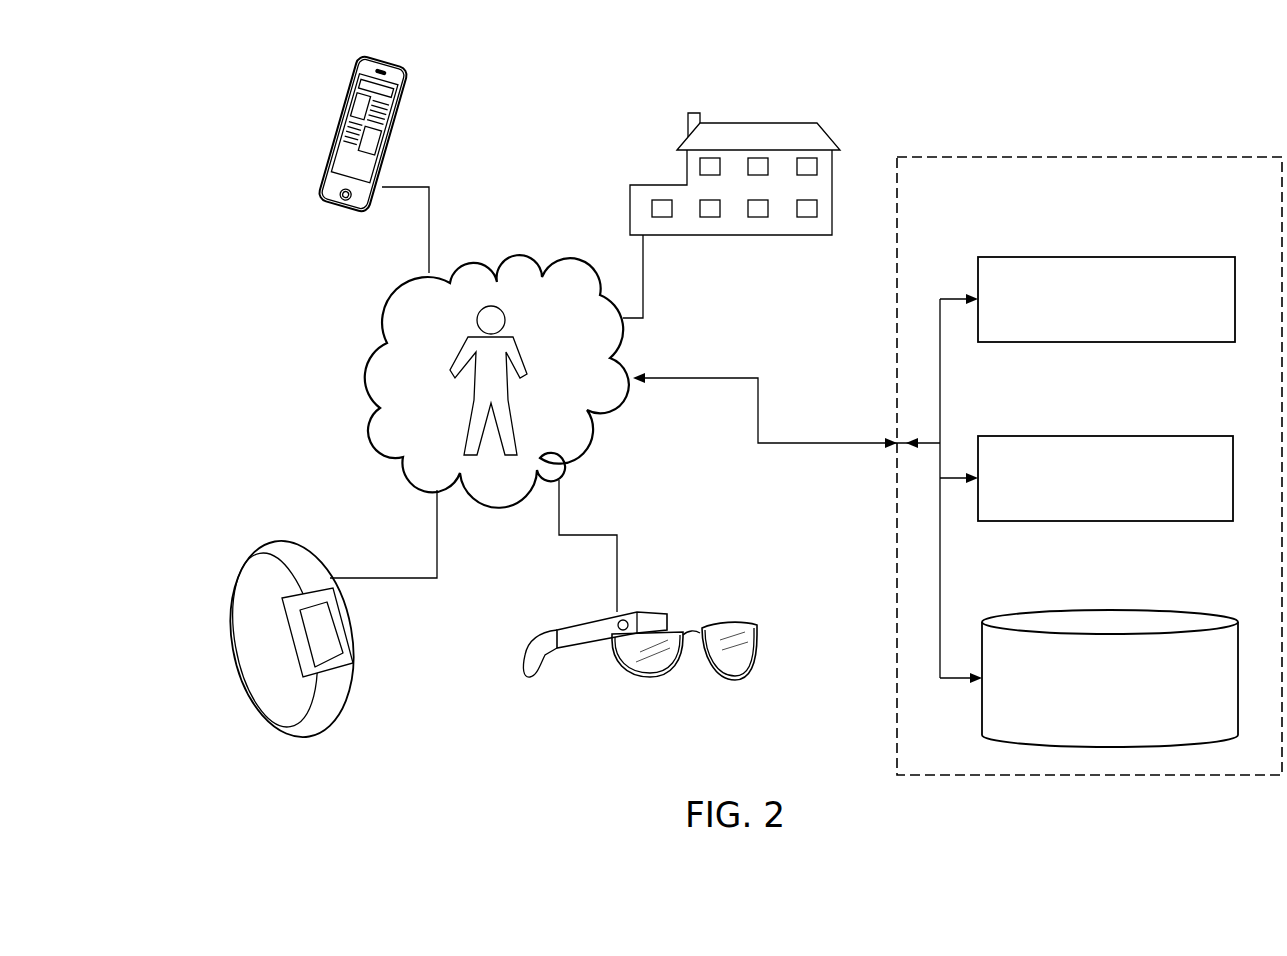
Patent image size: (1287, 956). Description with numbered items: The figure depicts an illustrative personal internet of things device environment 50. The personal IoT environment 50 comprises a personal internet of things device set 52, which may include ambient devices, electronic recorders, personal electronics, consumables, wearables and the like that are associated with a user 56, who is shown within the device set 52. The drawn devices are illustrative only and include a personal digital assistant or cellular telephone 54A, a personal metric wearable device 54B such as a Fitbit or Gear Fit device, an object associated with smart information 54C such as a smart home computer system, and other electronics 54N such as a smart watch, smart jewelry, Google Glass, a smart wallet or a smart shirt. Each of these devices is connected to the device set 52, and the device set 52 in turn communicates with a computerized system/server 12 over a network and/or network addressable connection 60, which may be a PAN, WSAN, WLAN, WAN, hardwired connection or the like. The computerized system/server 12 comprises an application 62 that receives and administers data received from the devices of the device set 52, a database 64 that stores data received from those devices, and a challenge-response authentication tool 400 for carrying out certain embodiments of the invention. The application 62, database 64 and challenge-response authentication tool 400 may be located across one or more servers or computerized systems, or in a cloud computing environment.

The personal internet of things device environment 50 is at (256, 274).
The personal internet of things device set 52 is at (363, 377).
The user 56 is at (470, 414).
The personal digital assistant or cellular telephone 54A is at (338, 118).
The personal metric wearable device 54B is at (237, 640).
The object associated with smart information 54C is at (760, 122).
The other electronics 54N is at (648, 678).
The network and/or network addressable connection 60 is at (803, 443).
The computerized system/server 12 is at (1117, 157).
The challenge-response authentication tool 400 is at (1222, 257).
The application 62 is at (1110, 436).
The database 64 is at (1113, 610).